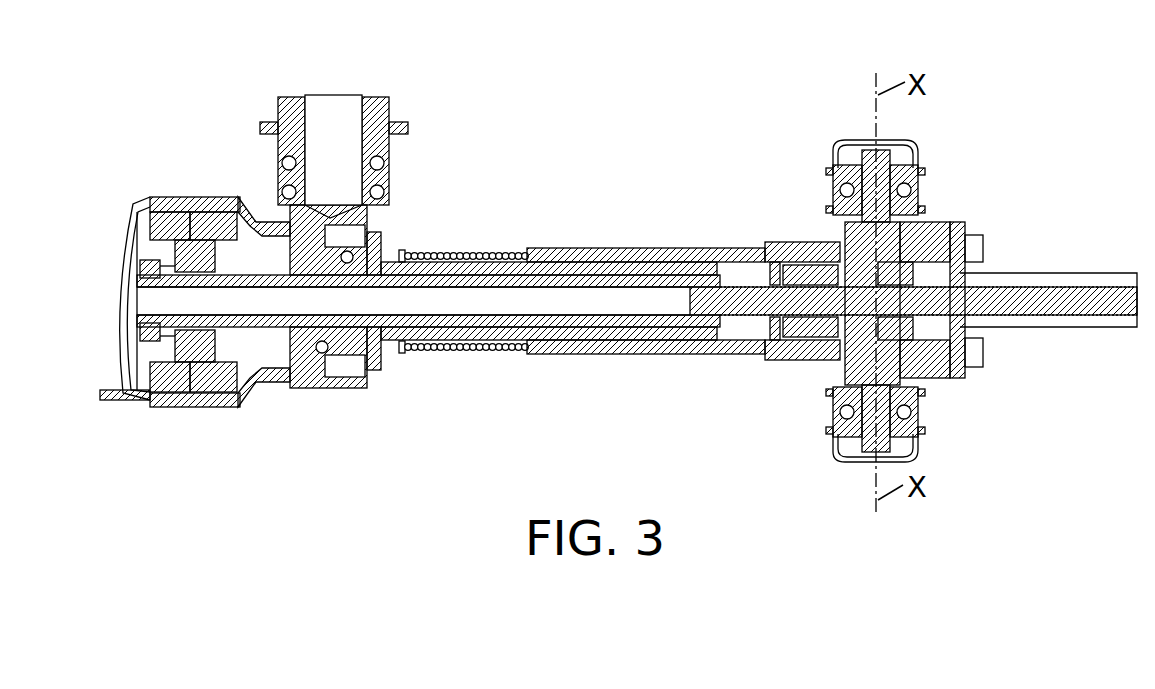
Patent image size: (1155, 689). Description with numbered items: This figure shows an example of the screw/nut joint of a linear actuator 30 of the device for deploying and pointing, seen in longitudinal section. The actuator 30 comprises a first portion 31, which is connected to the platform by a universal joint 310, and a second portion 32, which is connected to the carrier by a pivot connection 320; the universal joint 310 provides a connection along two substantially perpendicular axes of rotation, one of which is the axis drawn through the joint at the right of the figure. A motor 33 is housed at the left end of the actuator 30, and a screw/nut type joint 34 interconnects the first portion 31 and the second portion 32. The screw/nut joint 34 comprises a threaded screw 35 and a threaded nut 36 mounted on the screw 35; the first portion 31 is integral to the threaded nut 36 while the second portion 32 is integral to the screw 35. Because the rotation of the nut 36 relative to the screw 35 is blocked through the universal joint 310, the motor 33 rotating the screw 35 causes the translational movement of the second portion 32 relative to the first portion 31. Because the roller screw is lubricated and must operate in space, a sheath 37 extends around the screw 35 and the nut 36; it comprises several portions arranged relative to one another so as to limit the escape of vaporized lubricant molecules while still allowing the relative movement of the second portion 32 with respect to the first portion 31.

The actuator 30 is at (405, 458).
The first portion 31 is at (852, 460).
The second portion 32 is at (307, 390).
The motor 33 is at (185, 213).
The screw/nut type joint 34 is at (687, 236).
The threaded screw 35 is at (468, 275).
The threaded nut 36 is at (838, 347).
The sheath 37 is at (677, 352).
The universal joint 310 is at (850, 165).
The pivot connection 320 is at (260, 120).